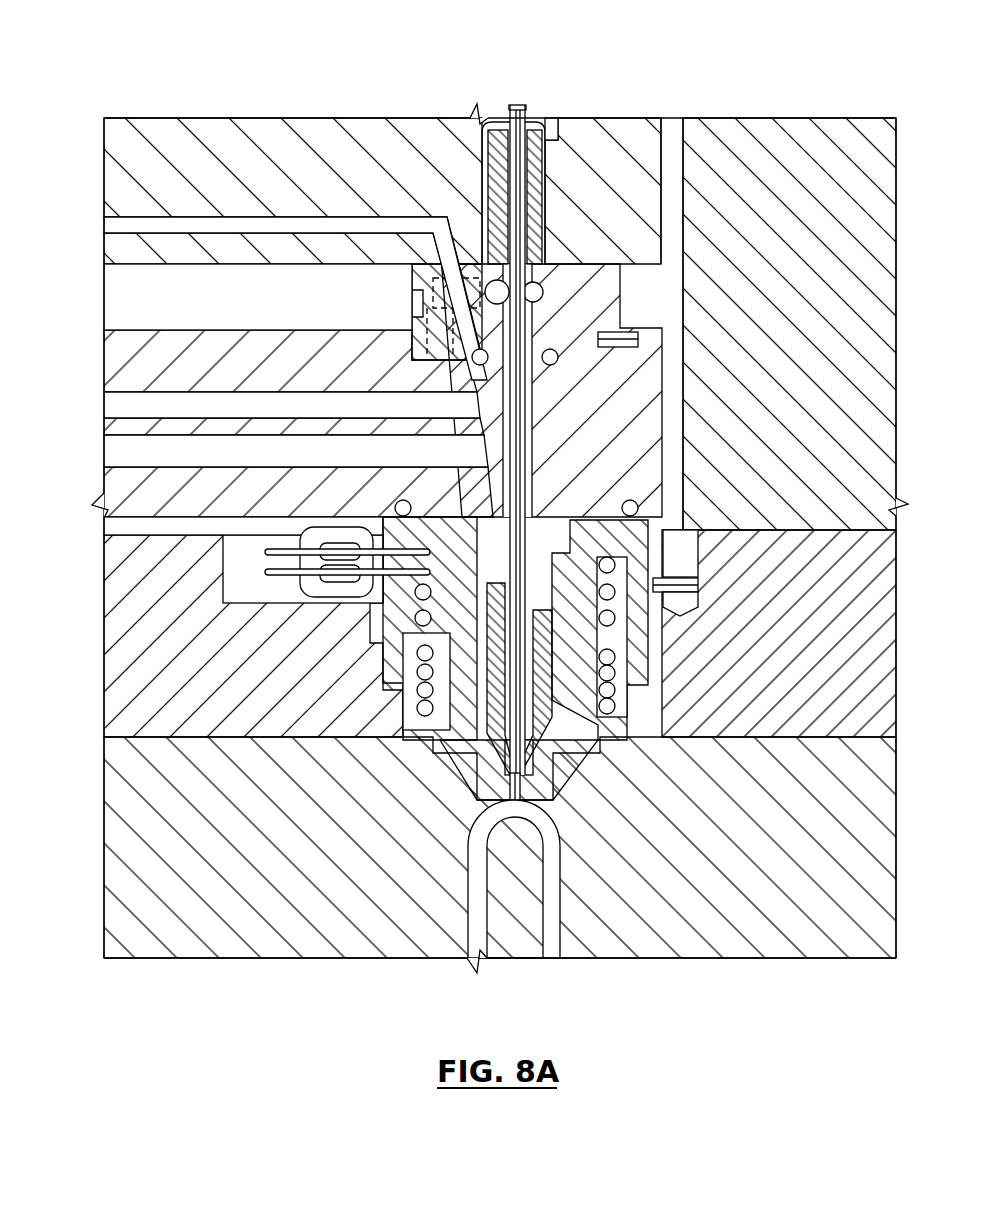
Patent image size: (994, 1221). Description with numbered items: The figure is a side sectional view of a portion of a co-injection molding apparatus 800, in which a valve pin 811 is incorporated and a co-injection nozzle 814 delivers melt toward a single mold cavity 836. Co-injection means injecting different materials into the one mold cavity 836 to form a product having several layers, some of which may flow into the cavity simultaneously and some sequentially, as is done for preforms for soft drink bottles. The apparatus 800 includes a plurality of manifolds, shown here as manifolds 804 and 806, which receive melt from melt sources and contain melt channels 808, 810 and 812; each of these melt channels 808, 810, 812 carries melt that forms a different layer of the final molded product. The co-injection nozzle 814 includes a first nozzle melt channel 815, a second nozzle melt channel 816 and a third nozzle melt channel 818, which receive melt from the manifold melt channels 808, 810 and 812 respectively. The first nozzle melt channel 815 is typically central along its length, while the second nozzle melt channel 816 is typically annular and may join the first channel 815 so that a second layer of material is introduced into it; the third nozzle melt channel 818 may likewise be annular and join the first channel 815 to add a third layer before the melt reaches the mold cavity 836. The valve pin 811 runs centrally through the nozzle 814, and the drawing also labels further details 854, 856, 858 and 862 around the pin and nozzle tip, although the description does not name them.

The co-injection molding apparatus 800 is at (316, 78).
The manifold 804 is at (226, 140).
The manifold 806 is at (238, 348).
The melt channel 808 is at (125, 227).
The melt channel 810 is at (125, 403).
The melt channel 812 is at (125, 447).
The valve pin 811 is at (522, 428).
The co-injection nozzle 814 is at (585, 605).
The first nozzle melt channel 815 is at (530, 343).
The second nozzle melt channel 816 is at (550, 362).
The third nozzle melt channel 818 is at (490, 750).
The mold cavity 836 is at (557, 913).
The electrode tip 854 is at (523, 800).
The inner conductor 856 is at (520, 470).
The electrode wire 858 is at (520, 110).
The tip end 862 is at (521, 780).